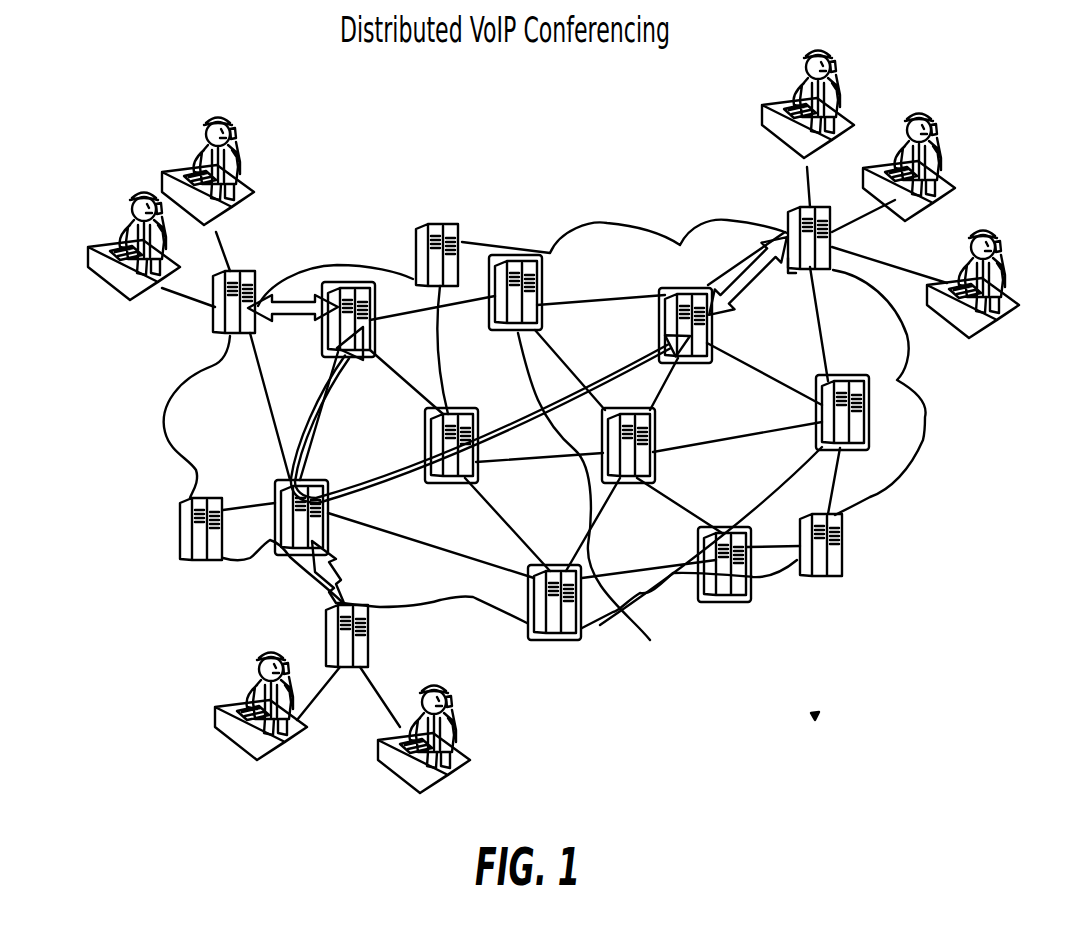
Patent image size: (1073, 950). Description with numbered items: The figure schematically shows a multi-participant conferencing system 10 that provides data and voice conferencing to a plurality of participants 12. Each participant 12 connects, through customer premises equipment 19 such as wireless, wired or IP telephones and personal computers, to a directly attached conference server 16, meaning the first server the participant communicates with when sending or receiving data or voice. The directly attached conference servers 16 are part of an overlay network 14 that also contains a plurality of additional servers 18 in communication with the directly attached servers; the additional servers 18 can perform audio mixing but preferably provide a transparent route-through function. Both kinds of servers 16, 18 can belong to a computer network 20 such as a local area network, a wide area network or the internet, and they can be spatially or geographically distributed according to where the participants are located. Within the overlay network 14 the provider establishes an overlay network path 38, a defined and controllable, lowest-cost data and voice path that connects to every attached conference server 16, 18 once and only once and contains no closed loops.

The multi-participant conferencing system 10 is at (814, 716).
The participant 12 is at (553, 436).
The overlay network 14 is at (163, 420).
The directly attached conference server 16 is at (248, 268).
The additional server 18 is at (350, 283).
The customer premises equipment 19 is at (564, 456).
The computer network 20 is at (926, 440).
The overlay network path 38 is at (594, 494).